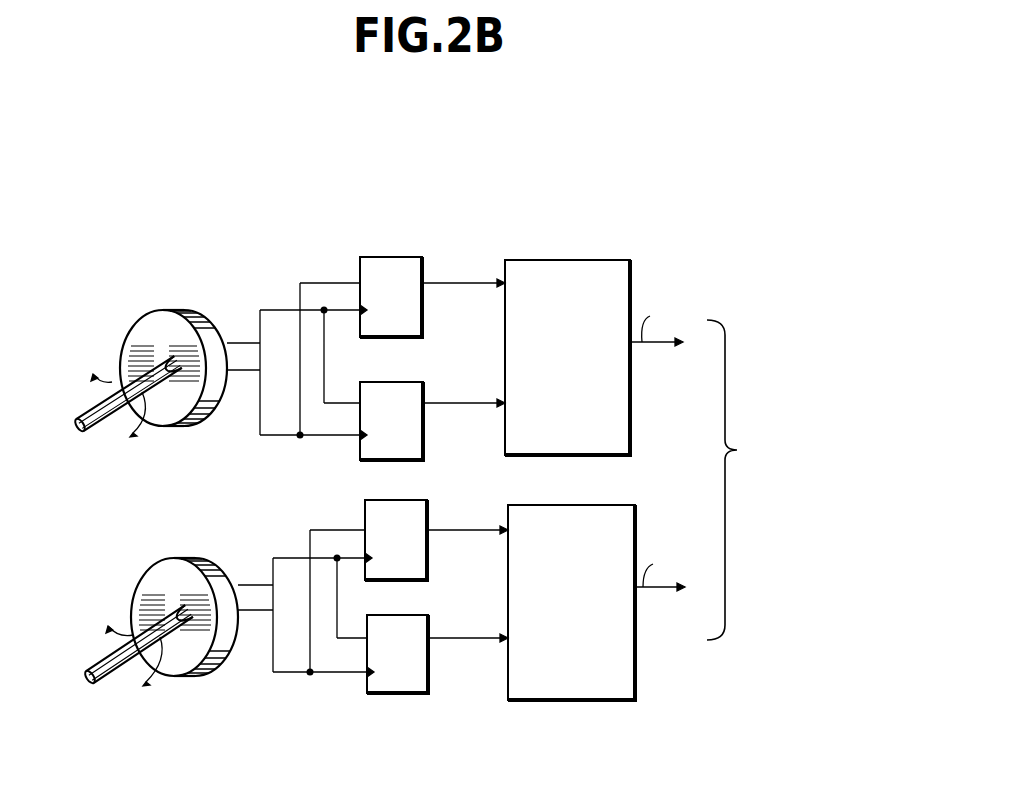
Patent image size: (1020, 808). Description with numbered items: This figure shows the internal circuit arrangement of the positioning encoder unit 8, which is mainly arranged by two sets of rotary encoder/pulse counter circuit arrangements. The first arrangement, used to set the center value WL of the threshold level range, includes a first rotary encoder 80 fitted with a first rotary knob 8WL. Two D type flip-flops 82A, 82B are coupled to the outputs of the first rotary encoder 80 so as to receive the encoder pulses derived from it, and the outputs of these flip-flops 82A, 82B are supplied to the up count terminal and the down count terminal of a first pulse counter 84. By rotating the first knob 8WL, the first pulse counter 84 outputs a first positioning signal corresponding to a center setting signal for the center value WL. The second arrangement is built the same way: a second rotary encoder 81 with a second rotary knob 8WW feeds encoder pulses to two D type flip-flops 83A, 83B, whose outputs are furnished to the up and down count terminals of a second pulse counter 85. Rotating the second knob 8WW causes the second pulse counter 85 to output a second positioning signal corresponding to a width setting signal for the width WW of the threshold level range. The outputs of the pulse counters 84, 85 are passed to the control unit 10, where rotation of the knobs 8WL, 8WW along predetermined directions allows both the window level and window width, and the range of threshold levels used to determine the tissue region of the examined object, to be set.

The positioning encoder unit 8 is at (618, 152).
The first rotary encoder 80 is at (177, 310).
The second rotary encoder 81 is at (217, 540).
The first rotary knob 8WL is at (107, 423).
The second rotary knob 8WW is at (105, 680).
The D type flip-flop 82A is at (382, 257).
The D type flip-flop 82B is at (390, 382).
The D type flip-flop 83A is at (398, 500).
The D type flip-flop 83B is at (402, 615).
The first pulse counter 84 is at (580, 258).
The second pulse counter 85 is at (613, 505).
The control unit 10 is at (932, 450).